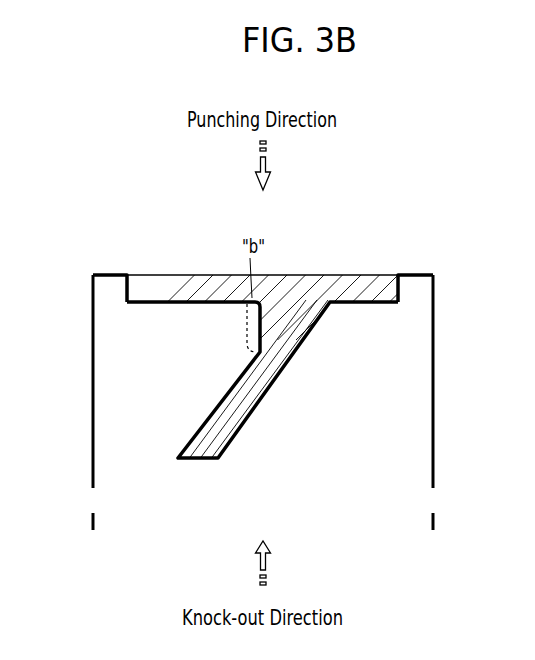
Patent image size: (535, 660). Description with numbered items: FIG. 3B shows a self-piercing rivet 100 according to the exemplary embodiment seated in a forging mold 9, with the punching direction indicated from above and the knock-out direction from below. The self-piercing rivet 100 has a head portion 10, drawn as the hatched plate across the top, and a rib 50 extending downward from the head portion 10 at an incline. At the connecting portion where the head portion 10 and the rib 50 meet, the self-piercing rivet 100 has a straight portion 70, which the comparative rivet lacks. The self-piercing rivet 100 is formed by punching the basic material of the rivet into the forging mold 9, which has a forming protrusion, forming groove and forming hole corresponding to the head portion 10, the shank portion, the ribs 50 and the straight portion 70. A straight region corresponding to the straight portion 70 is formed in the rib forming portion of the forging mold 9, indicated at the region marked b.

The forging mold 9 is at (92, 376).
The head portion 10 is at (182, 288).
The rib 50 is at (275, 370).
The straight portion 70 is at (252, 344).
The self-piercing rivet 100 is at (313, 268).